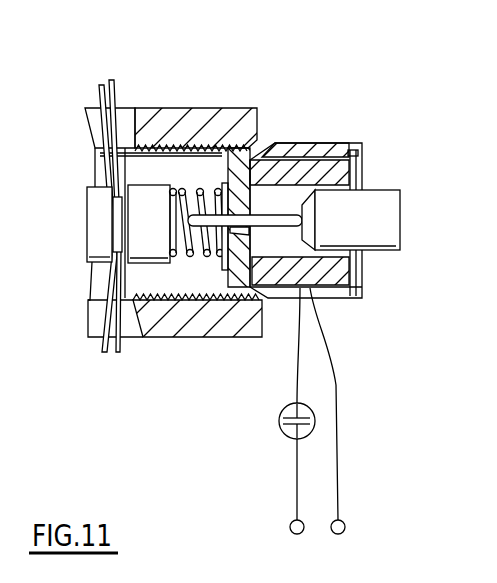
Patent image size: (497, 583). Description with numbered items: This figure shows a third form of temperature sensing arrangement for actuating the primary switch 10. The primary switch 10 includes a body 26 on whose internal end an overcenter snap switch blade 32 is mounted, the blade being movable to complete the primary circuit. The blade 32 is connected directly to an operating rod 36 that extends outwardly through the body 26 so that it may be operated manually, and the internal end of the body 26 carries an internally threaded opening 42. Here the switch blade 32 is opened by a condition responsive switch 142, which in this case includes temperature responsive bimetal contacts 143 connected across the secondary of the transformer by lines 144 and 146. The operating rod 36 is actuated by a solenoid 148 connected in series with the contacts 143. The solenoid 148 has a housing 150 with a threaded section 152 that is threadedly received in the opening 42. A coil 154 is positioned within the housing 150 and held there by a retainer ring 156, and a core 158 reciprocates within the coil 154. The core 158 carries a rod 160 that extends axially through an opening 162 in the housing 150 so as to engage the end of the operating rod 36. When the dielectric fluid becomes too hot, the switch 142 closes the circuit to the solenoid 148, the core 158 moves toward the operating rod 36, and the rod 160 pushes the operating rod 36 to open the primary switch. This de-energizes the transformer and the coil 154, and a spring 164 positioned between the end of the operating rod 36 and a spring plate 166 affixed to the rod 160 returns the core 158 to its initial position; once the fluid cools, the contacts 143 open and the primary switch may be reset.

The primary switch 10 is at (199, 76).
The body 26 is at (185, 337).
The overcenter snap switch blade 32 is at (120, 90).
The operating rod 36 is at (92, 228).
The internally threaded opening 42 is at (192, 158).
The condition responsive switch 142 is at (279, 416).
The bimetal contacts 143 is at (290, 432).
The line 144 is at (293, 497).
The line 146 is at (340, 495).
The solenoid 148 is at (369, 136).
The housing 150 is at (345, 300).
The threaded section 152 is at (265, 142).
The coil 154 is at (340, 178).
The retainer ring 156 is at (356, 278).
The core 158 is at (402, 222).
The rod 160 is at (284, 213).
The opening 162 is at (249, 232).
The spring 164 is at (180, 265).
The spring plate 166 is at (224, 264).